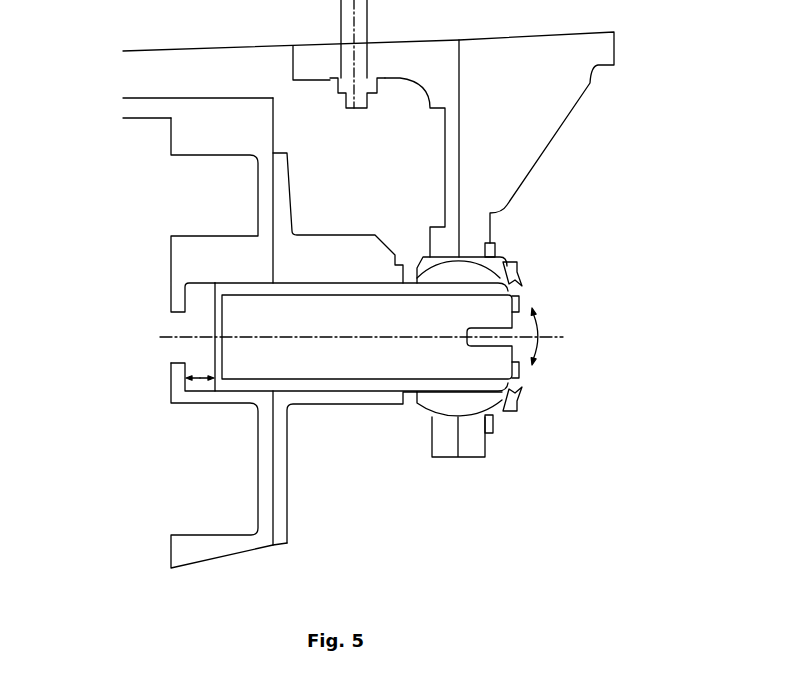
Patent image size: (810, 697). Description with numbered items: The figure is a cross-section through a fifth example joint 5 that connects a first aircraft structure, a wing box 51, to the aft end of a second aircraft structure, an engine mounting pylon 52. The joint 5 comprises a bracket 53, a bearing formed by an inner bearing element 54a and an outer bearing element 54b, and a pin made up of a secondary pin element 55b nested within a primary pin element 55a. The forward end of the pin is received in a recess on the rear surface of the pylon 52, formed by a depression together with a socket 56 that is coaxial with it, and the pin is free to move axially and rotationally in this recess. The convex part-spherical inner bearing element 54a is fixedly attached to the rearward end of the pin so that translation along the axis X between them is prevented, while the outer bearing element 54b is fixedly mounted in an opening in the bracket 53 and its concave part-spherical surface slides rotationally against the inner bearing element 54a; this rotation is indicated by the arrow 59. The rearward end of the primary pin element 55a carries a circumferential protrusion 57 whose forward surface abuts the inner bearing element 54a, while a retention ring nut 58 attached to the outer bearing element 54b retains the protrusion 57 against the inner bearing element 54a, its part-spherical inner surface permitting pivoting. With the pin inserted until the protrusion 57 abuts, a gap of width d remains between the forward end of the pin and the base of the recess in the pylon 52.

The joint 5 is at (669, 364).
The wing box 51 is at (320, 33).
The engine mounting pylon 52 is at (140, 107).
The bracket 53 is at (512, 154).
The inner bearing element 54a is at (470, 405).
The outer bearing element 54b is at (505, 414).
The primary pin element 55a is at (223, 289).
The secondary pin element 55b is at (226, 328).
The socket 56 is at (309, 259).
The circumferential protrusion 57 is at (514, 288).
The retention ring nut 58 is at (524, 405).
The arrow 59 is at (539, 325).
The axis X is at (162, 337).
The gap width d is at (200, 380).